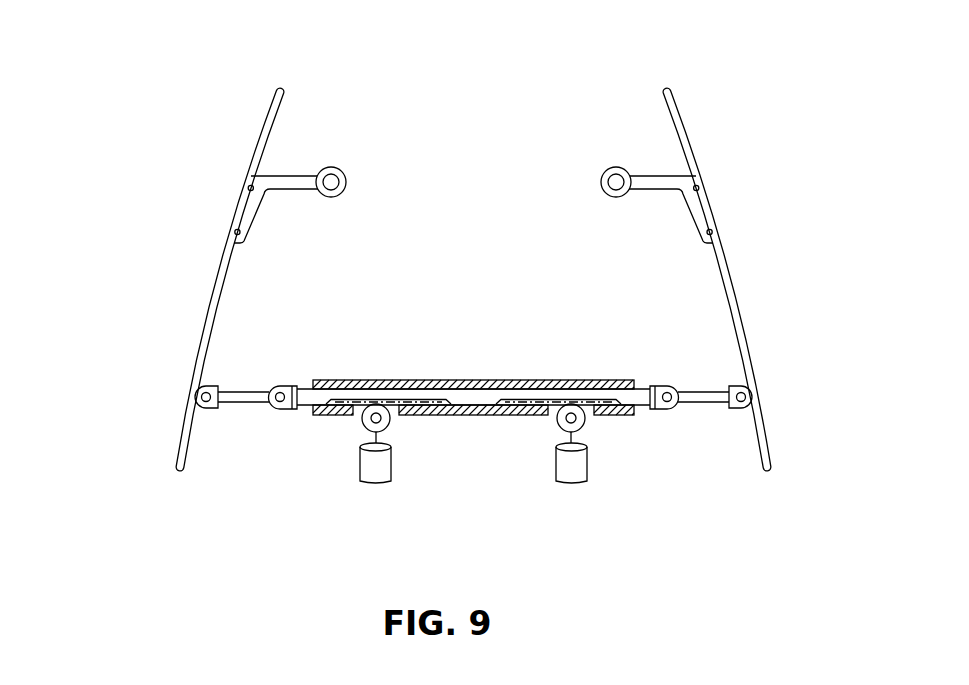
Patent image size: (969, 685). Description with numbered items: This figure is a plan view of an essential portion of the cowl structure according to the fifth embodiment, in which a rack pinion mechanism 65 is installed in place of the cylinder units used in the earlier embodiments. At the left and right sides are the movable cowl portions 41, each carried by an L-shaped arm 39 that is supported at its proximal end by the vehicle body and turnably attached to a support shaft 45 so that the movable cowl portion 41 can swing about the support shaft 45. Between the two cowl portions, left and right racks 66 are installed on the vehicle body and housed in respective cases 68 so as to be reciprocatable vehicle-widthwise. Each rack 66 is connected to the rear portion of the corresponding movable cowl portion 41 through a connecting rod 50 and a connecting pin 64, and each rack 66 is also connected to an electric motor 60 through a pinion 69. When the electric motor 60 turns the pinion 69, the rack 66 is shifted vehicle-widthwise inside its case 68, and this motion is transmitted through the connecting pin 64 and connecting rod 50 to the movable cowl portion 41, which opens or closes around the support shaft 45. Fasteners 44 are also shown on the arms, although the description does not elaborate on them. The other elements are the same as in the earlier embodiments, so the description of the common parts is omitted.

The arm 39 is at (291, 190).
The movable cowl portion 41 is at (207, 293).
The fastener 44 is at (232, 230).
The support shaft 45 is at (331, 182).
The connecting rod 50 is at (248, 403).
The electric motor 60 is at (378, 484).
The connecting pin 64 is at (207, 409).
The rack pinion mechanism 65 is at (465, 378).
The rack 66 is at (329, 380).
The case 68 is at (514, 380).
The pinion 69 is at (363, 428).